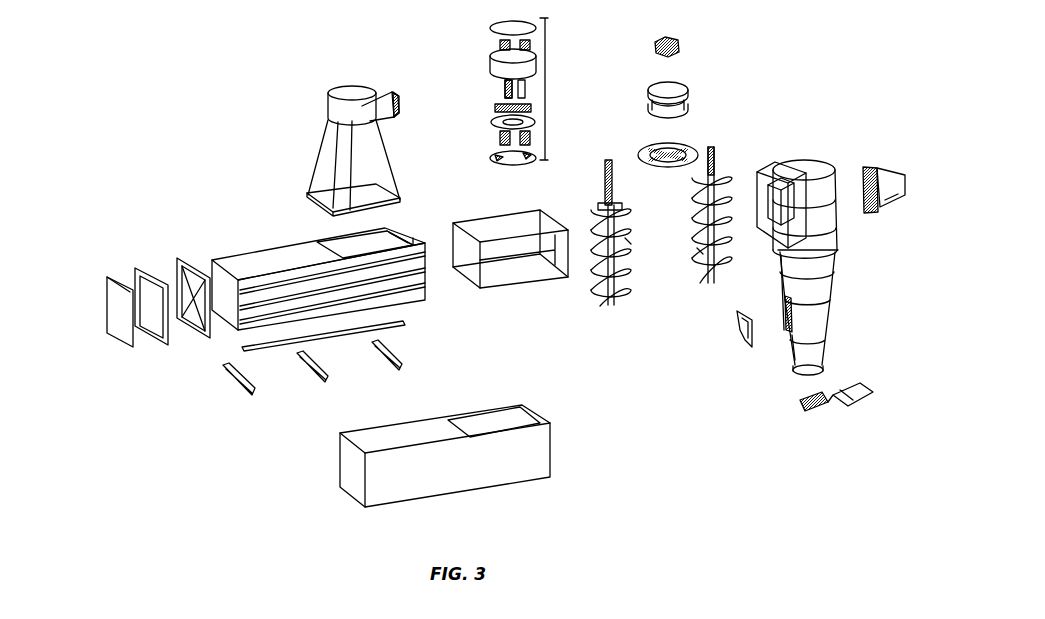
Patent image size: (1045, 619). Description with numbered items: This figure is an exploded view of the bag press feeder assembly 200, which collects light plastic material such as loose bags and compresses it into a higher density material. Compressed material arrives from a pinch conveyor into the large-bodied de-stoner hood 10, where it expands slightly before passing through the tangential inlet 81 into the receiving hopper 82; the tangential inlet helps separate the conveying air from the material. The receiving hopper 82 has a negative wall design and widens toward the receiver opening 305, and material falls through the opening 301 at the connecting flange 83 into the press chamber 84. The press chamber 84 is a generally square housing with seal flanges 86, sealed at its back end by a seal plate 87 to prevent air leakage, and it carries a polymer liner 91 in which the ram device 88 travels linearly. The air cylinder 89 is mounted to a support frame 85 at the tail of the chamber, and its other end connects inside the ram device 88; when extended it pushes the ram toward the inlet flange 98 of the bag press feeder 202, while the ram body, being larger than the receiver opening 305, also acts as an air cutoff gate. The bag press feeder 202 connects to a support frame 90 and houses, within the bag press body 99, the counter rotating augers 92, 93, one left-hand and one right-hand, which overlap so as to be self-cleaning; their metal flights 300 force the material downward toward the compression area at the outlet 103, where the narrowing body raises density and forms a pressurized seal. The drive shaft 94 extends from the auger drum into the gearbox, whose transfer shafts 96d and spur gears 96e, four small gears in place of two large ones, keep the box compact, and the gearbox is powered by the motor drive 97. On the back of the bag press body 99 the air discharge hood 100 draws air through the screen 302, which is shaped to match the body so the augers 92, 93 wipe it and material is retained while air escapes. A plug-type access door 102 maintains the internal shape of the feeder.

The de-stoner hood 10 is at (321, 148).
The inlet 81 is at (399, 94).
The receiving hopper 82 is at (332, 110).
The connecting flange 83 is at (312, 208).
The press chamber 84 is at (252, 262).
The support frame 85 is at (183, 262).
The seal flanges 86 is at (143, 270).
The seal plate 87 is at (105, 283).
The ram device 88 is at (515, 275).
The air cylinder 89 is at (320, 336).
The support frame 90 is at (255, 386).
The polymer liner 91 is at (406, 432).
The auger 92 is at (626, 304).
The auger 93 is at (693, 205).
The drive shaft 94 is at (605, 172).
The transfer shafts 96d is at (505, 90).
The spur gears 96e is at (495, 108).
The motor drive 97 is at (680, 46).
The inlet flange 98 is at (754, 178).
The bag press body 99 is at (822, 292).
The air discharge hood 100 is at (890, 200).
The access door 102 is at (740, 338).
The outlet 103 is at (826, 360).
The bag press feeder assembly 200 is at (688, 500).
The bag press feeder 202 is at (818, 256).
The metal flights 300 is at (698, 250).
The opening 301 is at (385, 238).
The screen 302 is at (860, 170).
The receiver opening 305 is at (377, 204).